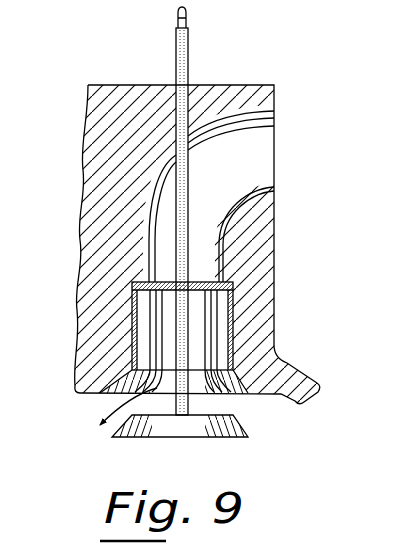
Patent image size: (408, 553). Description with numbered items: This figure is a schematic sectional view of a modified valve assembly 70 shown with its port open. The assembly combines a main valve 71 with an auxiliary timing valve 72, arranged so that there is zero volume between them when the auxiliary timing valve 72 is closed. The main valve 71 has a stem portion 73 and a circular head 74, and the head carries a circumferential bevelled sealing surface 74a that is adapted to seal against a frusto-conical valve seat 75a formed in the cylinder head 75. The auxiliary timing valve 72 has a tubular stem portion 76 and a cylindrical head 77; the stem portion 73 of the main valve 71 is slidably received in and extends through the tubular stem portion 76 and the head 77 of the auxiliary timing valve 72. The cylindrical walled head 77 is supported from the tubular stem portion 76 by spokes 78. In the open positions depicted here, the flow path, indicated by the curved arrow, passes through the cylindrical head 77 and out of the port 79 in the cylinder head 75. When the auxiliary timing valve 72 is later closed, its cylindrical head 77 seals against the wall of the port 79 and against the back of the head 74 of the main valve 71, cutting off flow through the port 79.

The valve assembly 70 is at (176, 241).
The main valve 71 is at (189, 343).
The auxiliary timing valve 72 is at (189, 147).
The stem portion 73 is at (188, 13).
The circular head 74 is at (233, 438).
The bevelled sealing surface 74a is at (246, 433).
The cylinder head 75 is at (105, 160).
The valve seat 75a is at (130, 388).
The tubular stem portion 76 is at (189, 60).
The cylindrical head 77 is at (133, 328).
The spokes 78 is at (230, 282).
The port 79 is at (245, 172).